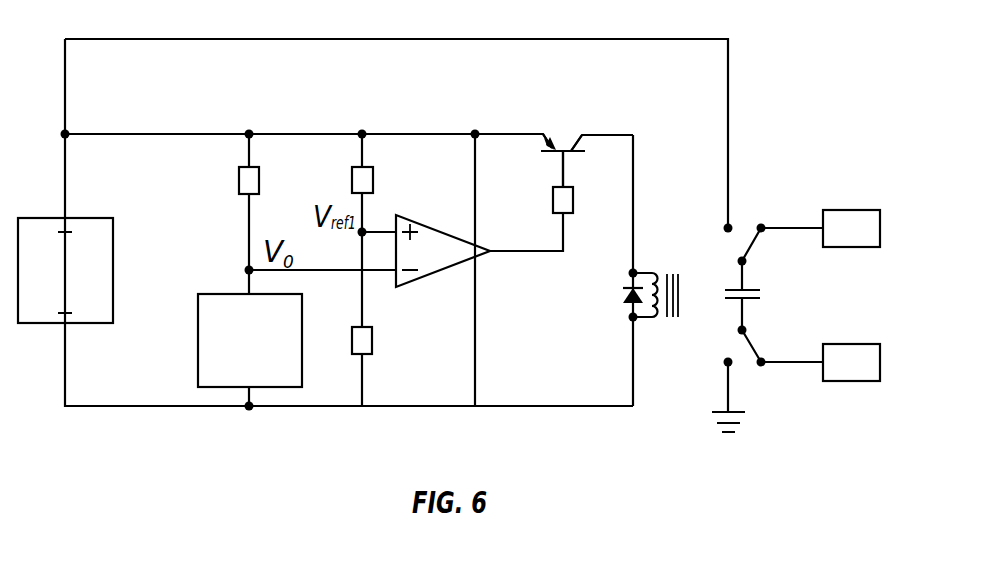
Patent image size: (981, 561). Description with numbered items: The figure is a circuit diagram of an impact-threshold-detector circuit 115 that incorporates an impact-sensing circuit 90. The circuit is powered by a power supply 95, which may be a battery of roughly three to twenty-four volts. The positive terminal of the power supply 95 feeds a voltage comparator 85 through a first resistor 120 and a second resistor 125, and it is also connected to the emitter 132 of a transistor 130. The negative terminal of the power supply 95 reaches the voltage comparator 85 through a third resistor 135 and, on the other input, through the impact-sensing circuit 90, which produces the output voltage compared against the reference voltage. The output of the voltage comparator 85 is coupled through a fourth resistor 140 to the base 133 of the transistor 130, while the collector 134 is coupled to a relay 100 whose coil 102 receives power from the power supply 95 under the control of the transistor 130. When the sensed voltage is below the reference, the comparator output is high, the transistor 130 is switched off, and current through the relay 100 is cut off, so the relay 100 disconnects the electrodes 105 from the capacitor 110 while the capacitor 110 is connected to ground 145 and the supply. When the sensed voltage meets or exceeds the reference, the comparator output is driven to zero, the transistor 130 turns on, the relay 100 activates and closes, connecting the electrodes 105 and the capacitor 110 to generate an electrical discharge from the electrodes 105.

The voltage comparator 85 is at (430, 274).
The impact-sensing circuit 90 is at (205, 294).
The power supply 95 is at (95, 218).
The relay 100 is at (642, 258).
The coil 102 is at (652, 320).
The electrodes 105 is at (870, 210).
The capacitor 110 is at (760, 290).
The impact-threshold-detector circuit 115 is at (606, 446).
The first resistor 120 is at (239, 181).
The second resistor 125 is at (352, 180).
The transistor 130 is at (571, 99).
The emitter 132 is at (550, 140).
The base 133 is at (580, 152).
The collector 134 is at (575, 148).
The third resistor 135 is at (372, 348).
The fourth resistor 140 is at (553, 198).
The ground 145 is at (722, 410).